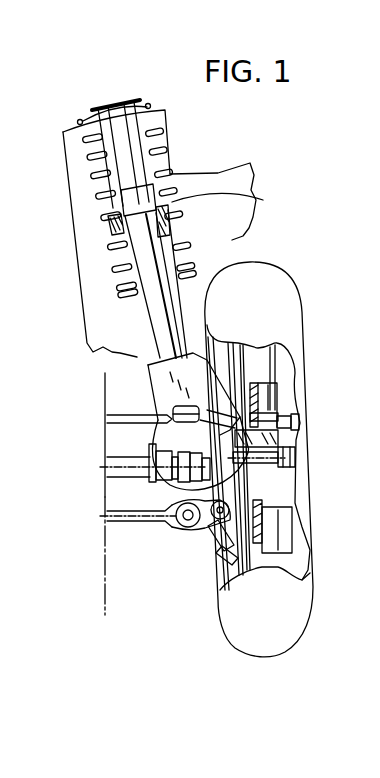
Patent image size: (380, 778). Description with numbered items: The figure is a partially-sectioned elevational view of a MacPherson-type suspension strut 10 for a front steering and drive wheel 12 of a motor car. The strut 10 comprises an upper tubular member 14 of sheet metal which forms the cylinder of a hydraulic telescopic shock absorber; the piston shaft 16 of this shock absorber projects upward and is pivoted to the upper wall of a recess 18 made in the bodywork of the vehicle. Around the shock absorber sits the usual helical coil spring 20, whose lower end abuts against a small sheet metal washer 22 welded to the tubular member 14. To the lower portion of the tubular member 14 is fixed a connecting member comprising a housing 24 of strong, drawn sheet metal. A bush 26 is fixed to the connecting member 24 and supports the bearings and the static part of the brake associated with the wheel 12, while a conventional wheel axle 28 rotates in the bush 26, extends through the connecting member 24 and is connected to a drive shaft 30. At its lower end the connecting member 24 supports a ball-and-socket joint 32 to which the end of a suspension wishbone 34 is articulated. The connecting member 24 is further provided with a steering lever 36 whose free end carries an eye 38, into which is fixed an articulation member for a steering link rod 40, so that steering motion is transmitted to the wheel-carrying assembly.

The strut 10 is at (139, 306).
The front steering and drive wheel 12 is at (285, 283).
The upper tubular member 14 is at (135, 233).
The piston shaft 16 is at (118, 169).
The recess 18 is at (172, 136).
The helical coil spring 20 is at (263, 200).
The sheet metal washer 22 is at (187, 287).
The housing 24 is at (163, 375).
The bush 26 is at (298, 422).
The wheel axle 28 is at (290, 442).
The drive shaft 30 is at (128, 463).
The ball-and-socket joint 32 is at (210, 523).
The suspension wishbone 34 is at (138, 515).
The steering lever 36 is at (133, 470).
The eye 38 is at (171, 476).
The steering link rod 40 is at (127, 415).